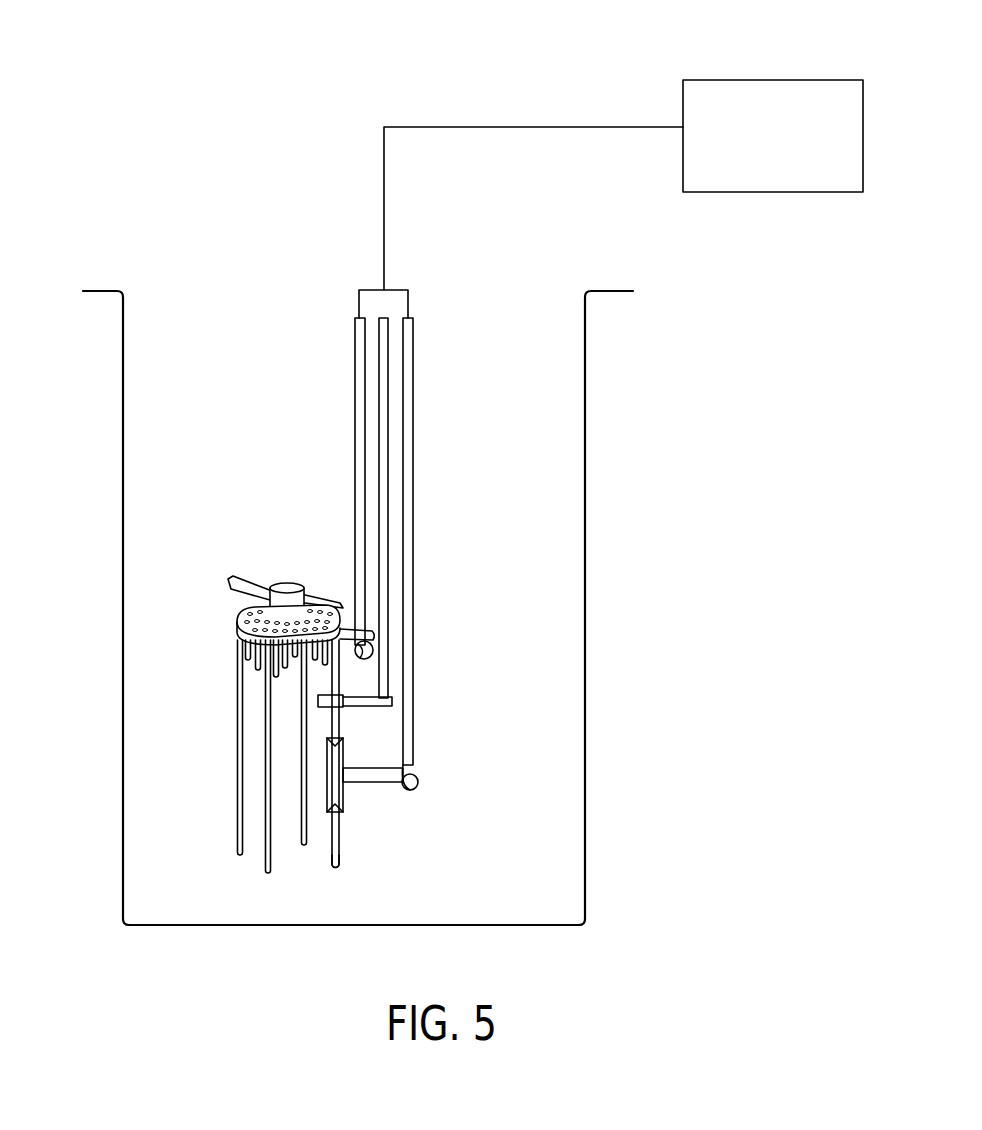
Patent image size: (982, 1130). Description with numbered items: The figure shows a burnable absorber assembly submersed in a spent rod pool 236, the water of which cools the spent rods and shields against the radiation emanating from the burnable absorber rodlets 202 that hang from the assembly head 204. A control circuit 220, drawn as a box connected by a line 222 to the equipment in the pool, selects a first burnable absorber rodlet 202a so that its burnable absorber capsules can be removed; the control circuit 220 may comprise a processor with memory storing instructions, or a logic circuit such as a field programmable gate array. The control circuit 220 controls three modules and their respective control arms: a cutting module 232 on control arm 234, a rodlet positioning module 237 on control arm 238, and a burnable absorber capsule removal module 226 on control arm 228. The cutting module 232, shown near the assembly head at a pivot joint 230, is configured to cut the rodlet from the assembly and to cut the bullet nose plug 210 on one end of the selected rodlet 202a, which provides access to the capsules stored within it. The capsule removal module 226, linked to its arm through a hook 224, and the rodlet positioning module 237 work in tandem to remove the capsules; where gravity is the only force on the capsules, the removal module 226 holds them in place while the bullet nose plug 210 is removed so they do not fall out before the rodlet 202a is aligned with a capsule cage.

The control circuit 220 is at (742, 88).
The control line 222 is at (515, 125).
The spent rod pool 236 is at (153, 603).
The control arm 234 is at (367, 405).
The control arm 238 is at (392, 438).
The control arm 228 is at (413, 483).
The agitator head with blade 204 is at (240, 608).
The burnable absorber rodlets 202 is at (237, 738).
The first burnable absorber rodlet 202a is at (337, 845).
The bullet nose plug 210 is at (337, 867).
The cutting module 232 is at (375, 635).
The pivot joint 230 is at (375, 650).
The rodlet positioning module 237 is at (343, 690).
The burnable absorber capsule removal module 226 is at (360, 768).
The pivot hook 224 is at (420, 792).